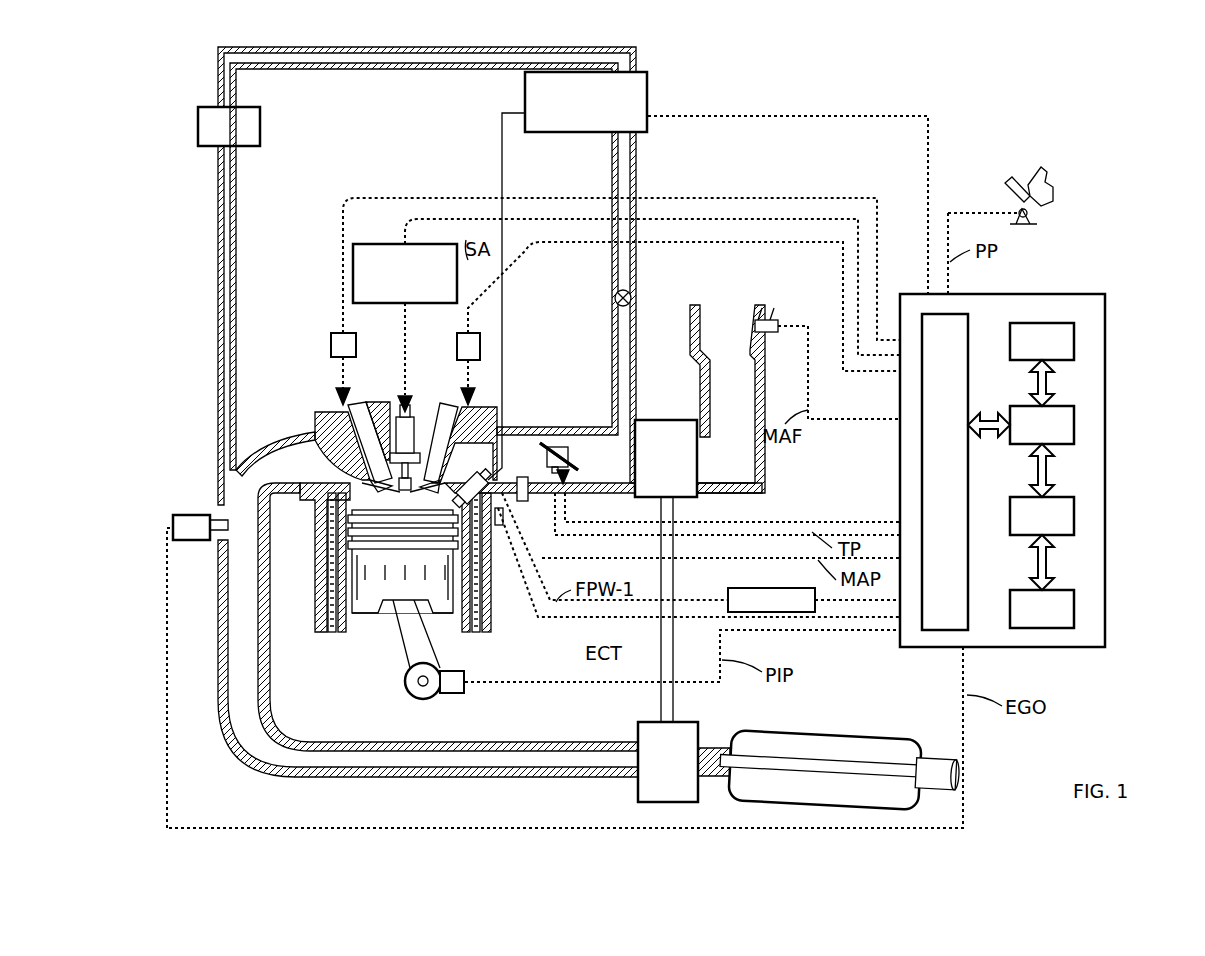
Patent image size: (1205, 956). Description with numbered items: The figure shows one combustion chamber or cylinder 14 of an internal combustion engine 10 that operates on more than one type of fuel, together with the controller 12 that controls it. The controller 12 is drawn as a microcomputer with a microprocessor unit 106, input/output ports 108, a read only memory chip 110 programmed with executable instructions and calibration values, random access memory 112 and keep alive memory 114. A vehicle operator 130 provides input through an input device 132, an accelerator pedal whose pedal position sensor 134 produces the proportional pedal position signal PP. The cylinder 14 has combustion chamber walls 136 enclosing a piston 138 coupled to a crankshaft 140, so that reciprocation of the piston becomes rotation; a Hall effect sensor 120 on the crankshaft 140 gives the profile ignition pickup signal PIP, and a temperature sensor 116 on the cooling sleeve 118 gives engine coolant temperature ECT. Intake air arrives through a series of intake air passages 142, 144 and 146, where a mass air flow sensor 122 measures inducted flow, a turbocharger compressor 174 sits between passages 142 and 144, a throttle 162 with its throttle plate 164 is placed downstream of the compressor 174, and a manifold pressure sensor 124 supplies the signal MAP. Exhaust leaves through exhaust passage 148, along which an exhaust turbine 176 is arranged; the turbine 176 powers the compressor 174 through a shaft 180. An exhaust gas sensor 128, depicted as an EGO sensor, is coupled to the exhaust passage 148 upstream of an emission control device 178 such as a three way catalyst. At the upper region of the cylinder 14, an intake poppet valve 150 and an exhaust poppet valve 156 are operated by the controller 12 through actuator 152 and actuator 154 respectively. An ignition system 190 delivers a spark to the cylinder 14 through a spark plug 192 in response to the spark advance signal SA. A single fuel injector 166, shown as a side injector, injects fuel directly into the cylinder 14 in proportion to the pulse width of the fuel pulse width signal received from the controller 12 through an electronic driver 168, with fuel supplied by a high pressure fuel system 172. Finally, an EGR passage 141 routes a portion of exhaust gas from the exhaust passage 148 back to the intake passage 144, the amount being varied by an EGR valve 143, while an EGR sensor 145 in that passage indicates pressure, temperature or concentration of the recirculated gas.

The internal combustion engine 10 is at (105, 146).
The controller 12 is at (1038, 458).
The cylinder 14 is at (312, 525).
The microprocessor unit 106 is at (1076, 424).
The input/output ports 108 is at (975, 322).
The read only memory chip 110 is at (1076, 340).
The random access memory 112 is at (1076, 516).
The keep alive memory 114 is at (1076, 610).
The temperature sensor 116 is at (500, 528).
The cooling sleeve 118 is at (470, 600).
The Hall effect sensor 120 is at (458, 695).
The mass air flow sensor 122 is at (772, 318).
The manifold pressure sensor 124 is at (530, 502).
The exhaust gas sensor 128 is at (173, 520).
The vehicle operator 130 is at (1052, 188).
The input device 132 is at (1007, 195).
The pedal position sensor 134 is at (1035, 213).
The combustion chamber walls 136 is at (346, 630).
The piston 138 is at (385, 600).
The crankshaft 140 is at (412, 697).
The EGR passage 141 is at (630, 176).
The intake air passage 142 is at (727, 399).
The EGR valve 143 is at (631, 293).
The intake air passage 144 is at (567, 464).
The EGR sensor 145 is at (260, 126).
The intake air passage 146 is at (495, 468).
The exhaust passage 148 is at (428, 604).
The intake poppet valve 150 is at (418, 462).
The actuator 152 is at (457, 348).
The actuator 154 is at (333, 335).
The exhaust poppet valve 156 is at (330, 445).
The throttle 162 is at (560, 445).
The throttle plate 164 is at (545, 448).
The fuel injector 166 is at (589, 529).
The electronic driver 168 is at (728, 592).
The high pressure fuel system 172 is at (647, 78).
The compressor 174 is at (652, 420).
The exhaust turbine 176 is at (638, 790).
The emission control device 178 is at (882, 740).
The shaft 180 is at (668, 692).
The ignition system 190 is at (370, 244).
The spark plug 192 is at (400, 450).